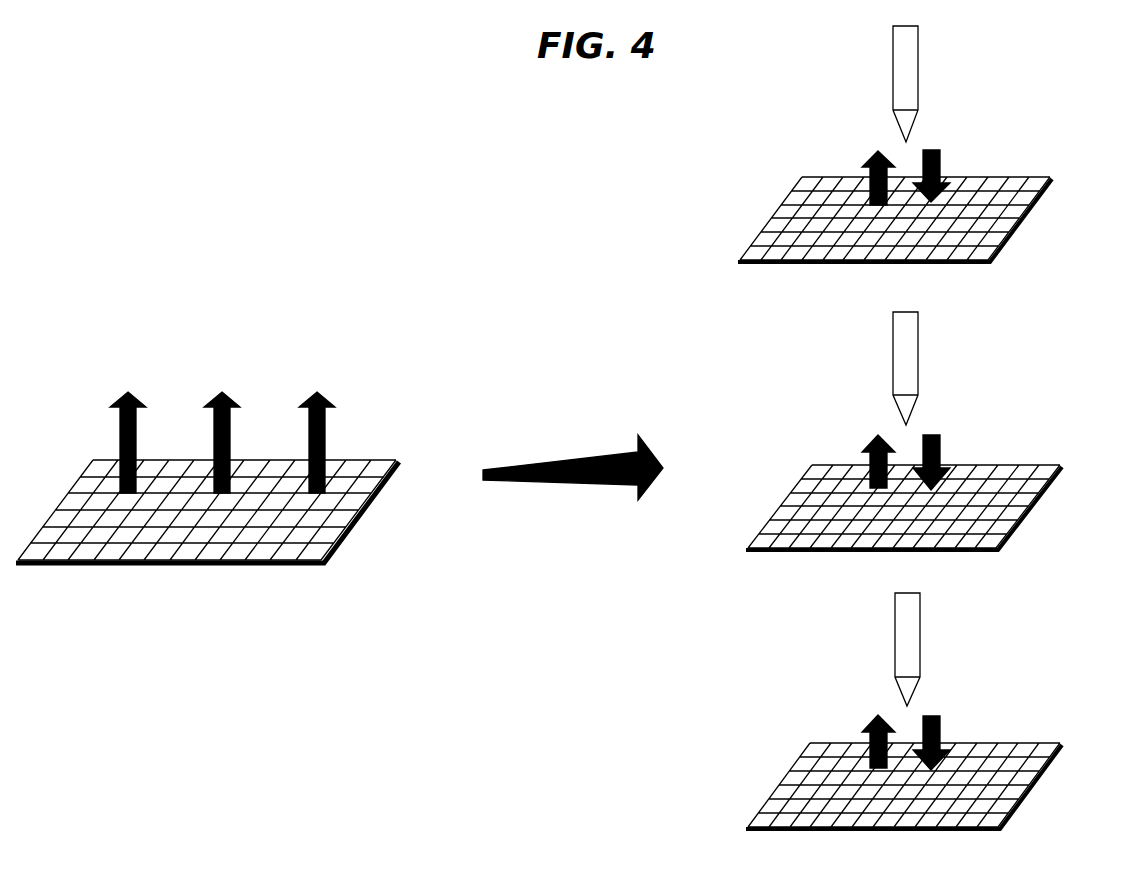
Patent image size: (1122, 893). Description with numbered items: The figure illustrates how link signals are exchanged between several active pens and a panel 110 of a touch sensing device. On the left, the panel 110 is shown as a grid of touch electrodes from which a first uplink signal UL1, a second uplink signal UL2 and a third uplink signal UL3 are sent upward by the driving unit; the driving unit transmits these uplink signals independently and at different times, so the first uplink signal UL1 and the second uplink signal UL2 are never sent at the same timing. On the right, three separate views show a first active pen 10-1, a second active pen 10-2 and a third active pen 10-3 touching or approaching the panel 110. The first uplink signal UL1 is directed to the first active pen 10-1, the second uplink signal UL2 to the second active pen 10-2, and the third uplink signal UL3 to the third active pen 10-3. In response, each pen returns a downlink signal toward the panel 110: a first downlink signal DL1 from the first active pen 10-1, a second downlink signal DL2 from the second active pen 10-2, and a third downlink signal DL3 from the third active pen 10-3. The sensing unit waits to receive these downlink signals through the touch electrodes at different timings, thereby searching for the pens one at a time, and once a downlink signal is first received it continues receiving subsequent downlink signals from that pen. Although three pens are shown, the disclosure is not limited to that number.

The panel 110 is at (326, 559).
The first active pen 10-1 is at (918, 60).
The second active pen 10-2 is at (918, 345).
The third active pen 10-3 is at (920, 622).
The first uplink signal UL1 is at (502, 313).
The second uplink signal UL2 is at (548, 428).
The third uplink signal UL3 is at (596, 565).
The first downlink signal DL1 is at (954, 168).
The second downlink signal DL2 is at (954, 453).
The third downlink signal DL3 is at (954, 732).